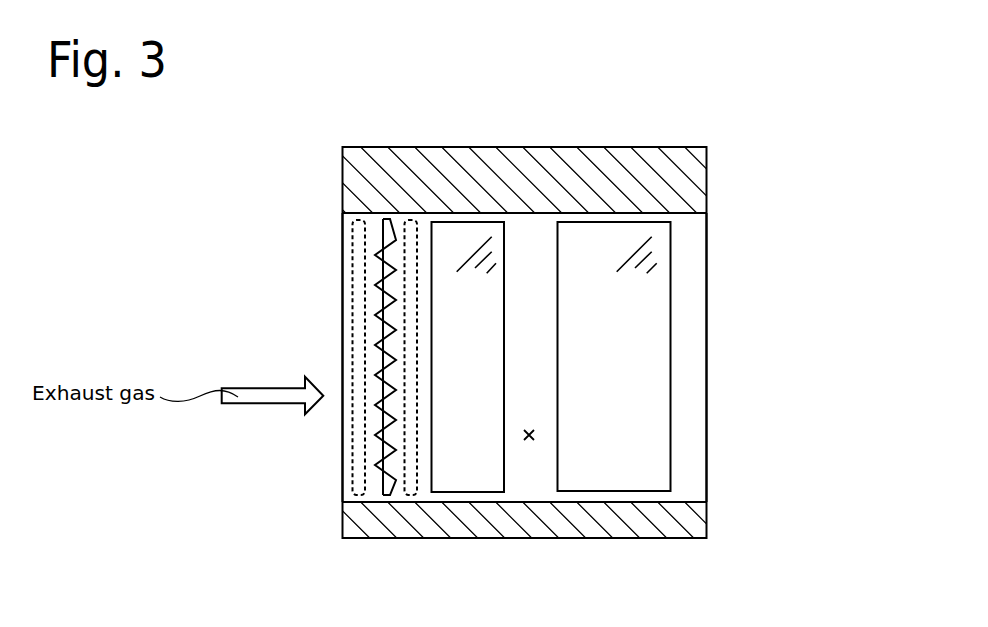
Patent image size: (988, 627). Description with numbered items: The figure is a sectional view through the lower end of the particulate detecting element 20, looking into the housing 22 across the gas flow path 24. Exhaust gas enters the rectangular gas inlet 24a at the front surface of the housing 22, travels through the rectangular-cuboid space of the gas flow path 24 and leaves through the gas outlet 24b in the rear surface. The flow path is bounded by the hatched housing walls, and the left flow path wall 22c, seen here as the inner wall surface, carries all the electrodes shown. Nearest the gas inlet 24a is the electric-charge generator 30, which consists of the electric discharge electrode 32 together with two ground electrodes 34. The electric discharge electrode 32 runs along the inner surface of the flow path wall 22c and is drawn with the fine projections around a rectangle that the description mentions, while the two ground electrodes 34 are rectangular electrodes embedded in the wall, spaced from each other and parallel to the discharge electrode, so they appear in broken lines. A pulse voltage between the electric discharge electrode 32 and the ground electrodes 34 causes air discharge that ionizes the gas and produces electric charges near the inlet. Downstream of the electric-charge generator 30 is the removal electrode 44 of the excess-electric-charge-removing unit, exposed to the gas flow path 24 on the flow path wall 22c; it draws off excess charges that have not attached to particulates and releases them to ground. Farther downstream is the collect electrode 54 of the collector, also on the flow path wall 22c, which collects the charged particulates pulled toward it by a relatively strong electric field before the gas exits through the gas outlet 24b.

The particulate detecting element 20 is at (704, 139).
The housing 22 is at (690, 170).
The flow path wall 22c is at (697, 263).
The gas flow path 24 is at (527, 441).
The gas inlet 24a is at (342, 435).
The gas outlet 24b is at (706, 434).
The electric-charge generator 30 is at (290, 357).
The electric discharge electrode 32 is at (383, 258).
The ground electrode 34 is at (362, 297).
The removal electrode 44 is at (487, 338).
The collect electrode 54 is at (640, 397).